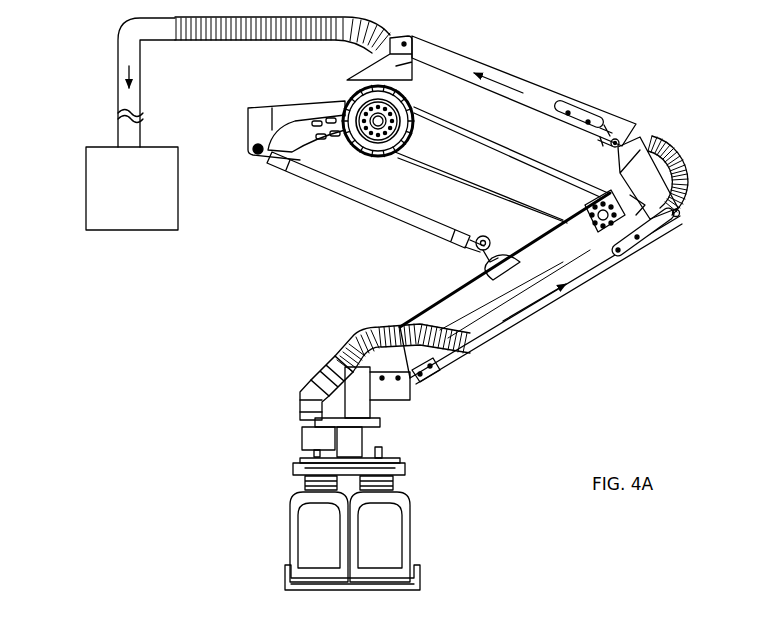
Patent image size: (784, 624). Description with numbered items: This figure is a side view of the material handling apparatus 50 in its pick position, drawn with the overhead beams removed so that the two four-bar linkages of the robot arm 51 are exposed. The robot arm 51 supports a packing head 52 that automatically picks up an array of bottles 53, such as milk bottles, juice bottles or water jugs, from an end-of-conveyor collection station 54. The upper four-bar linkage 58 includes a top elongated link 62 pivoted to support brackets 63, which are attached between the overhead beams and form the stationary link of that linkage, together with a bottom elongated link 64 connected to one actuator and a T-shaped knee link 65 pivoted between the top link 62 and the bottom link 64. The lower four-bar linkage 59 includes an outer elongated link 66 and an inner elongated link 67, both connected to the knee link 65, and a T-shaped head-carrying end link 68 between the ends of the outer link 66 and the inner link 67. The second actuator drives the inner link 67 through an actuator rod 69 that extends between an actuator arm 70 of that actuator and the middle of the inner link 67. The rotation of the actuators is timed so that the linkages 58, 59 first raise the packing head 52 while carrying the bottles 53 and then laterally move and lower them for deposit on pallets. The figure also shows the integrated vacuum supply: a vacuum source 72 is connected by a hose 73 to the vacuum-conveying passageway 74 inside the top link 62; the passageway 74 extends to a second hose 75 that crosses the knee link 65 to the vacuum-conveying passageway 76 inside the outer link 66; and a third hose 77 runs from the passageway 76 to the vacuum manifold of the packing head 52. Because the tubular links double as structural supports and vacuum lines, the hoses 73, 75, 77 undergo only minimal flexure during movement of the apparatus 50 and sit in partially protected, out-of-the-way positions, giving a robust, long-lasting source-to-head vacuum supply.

The material handling apparatus 50 is at (668, 27).
The robot arm 51 is at (708, 171).
The packing head 52 is at (409, 448).
The bottles 53 is at (422, 521).
The collection station 54 is at (300, 585).
The first four-bar linkage 58 is at (542, 47).
The second four-bar linkage 59 is at (562, 357).
The top elongated link 62 is at (543, 93).
The support brackets 63 is at (397, 67).
The bottom elongated link 64 is at (478, 170).
The T-shaped knee link 65 is at (640, 172).
The outer elongated link 66 is at (577, 289).
The inner elongated link 67 is at (448, 306).
The T-shaped head-carrying end link 68 is at (390, 386).
The actuator rod 69 is at (375, 199).
The actuator arm 70 is at (295, 140).
The vacuum source 72 is at (141, 195).
The hose 73 is at (118, 43).
The vacuum-conveying passageway 74 is at (492, 70).
The second hose 75 is at (692, 188).
The vacuum-conveying passageway 76 is at (603, 270).
The third hose 77 is at (373, 333).